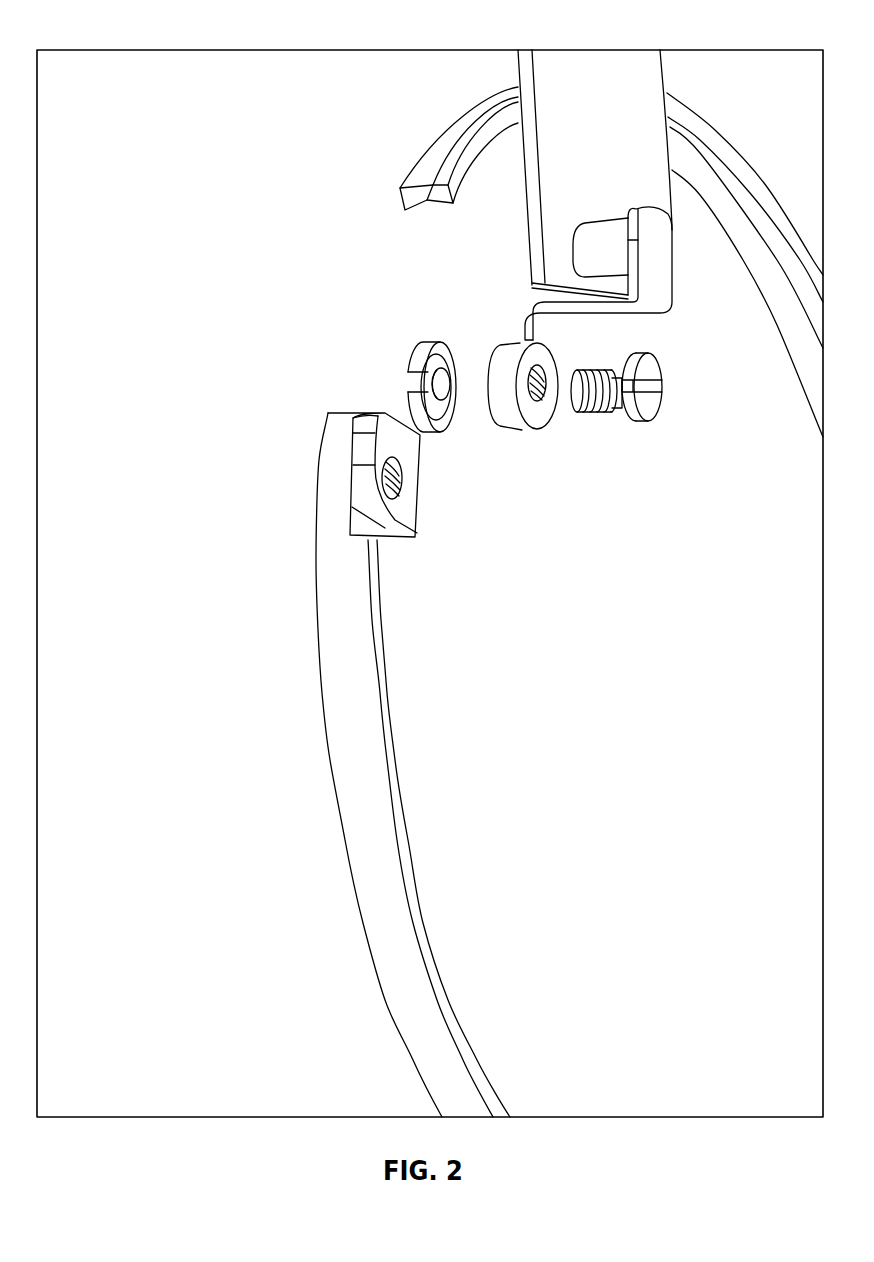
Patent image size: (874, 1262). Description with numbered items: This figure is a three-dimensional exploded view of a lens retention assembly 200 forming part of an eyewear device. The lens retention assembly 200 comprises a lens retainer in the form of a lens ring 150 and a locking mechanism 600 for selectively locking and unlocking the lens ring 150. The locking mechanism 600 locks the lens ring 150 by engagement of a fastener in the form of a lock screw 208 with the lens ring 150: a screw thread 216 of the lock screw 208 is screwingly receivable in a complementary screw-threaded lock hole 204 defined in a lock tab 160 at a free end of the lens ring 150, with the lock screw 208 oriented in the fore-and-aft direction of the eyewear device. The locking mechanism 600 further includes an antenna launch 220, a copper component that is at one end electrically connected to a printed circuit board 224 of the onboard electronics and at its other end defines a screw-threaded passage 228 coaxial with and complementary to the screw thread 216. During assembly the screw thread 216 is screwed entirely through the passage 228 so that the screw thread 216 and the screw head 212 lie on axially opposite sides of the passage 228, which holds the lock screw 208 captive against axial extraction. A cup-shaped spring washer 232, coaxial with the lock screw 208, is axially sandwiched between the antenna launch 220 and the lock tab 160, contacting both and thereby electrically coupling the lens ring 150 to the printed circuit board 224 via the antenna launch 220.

The lens retention assembly 200 is at (722, 32).
The lens ring 150 is at (427, 903).
The lock tab 160 is at (352, 453).
The lock hole 204 is at (410, 482).
The printed circuit board 224 is at (633, 191).
The locking mechanism 600 is at (378, 248).
The spring washer 232 is at (420, 343).
The screw-threaded passage 228 is at (524, 354).
The antenna launch 220 is at (540, 412).
The screw thread 216 is at (590, 362).
The screw head 212 is at (662, 368).
The lock screw 208 is at (660, 432).